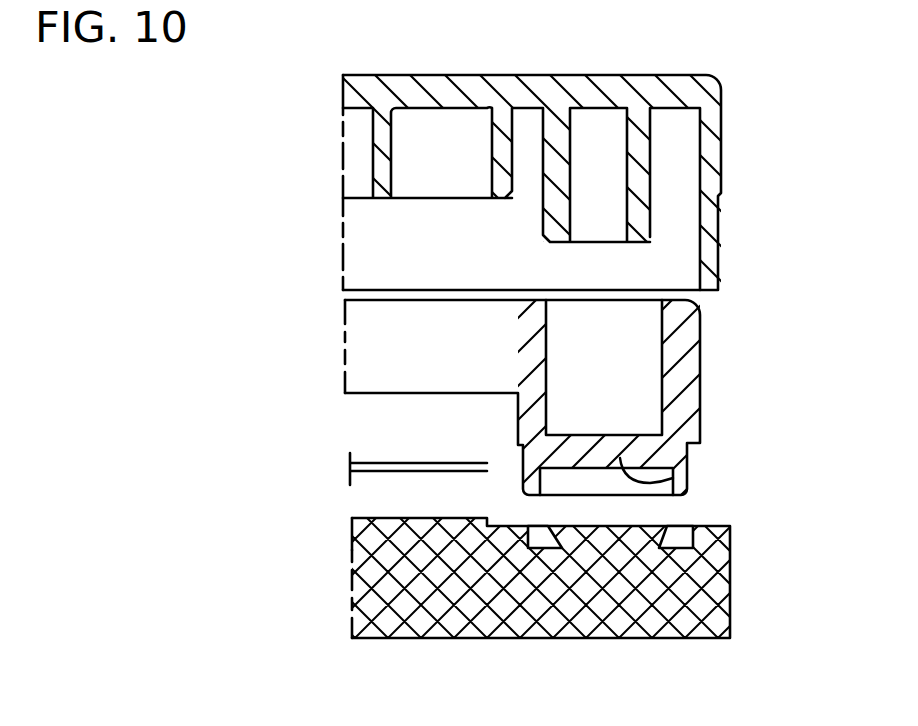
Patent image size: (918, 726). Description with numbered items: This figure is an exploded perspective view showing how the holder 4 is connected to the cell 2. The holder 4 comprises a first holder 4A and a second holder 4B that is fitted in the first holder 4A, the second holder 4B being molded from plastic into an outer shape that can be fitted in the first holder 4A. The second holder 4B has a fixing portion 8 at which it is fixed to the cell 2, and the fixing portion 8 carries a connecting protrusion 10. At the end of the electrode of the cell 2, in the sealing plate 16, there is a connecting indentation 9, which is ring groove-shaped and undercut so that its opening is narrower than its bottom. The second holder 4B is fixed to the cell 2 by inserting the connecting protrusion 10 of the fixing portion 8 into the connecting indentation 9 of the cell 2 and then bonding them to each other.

The cell 2 is at (536, 598).
The holder 4 is at (524, 285).
The first holder 4A is at (712, 160).
The second holder 4B is at (687, 363).
The fixing portion 8 is at (673, 478).
The connecting indentation 9 is at (542, 549).
The connecting protrusion 10 is at (527, 482).
The sealing plate 16 is at (712, 567).